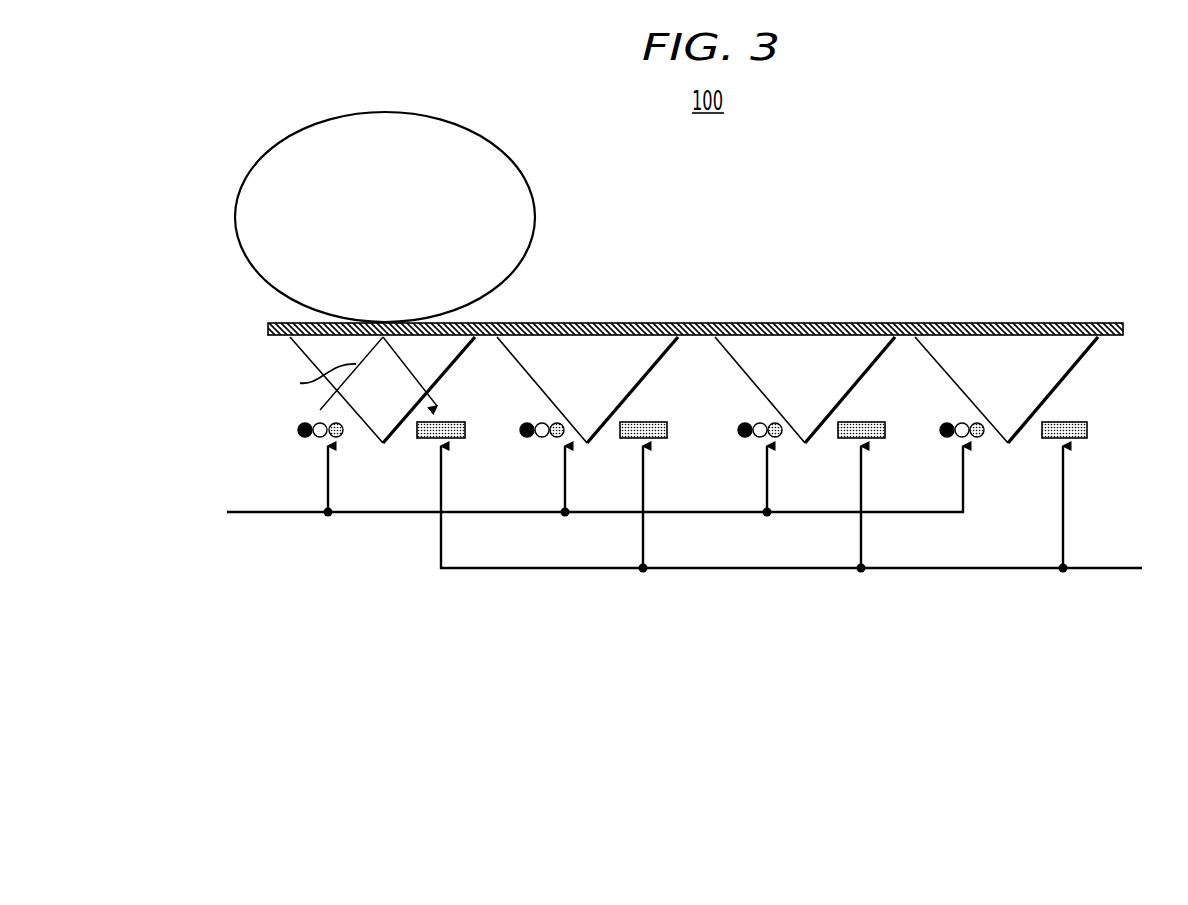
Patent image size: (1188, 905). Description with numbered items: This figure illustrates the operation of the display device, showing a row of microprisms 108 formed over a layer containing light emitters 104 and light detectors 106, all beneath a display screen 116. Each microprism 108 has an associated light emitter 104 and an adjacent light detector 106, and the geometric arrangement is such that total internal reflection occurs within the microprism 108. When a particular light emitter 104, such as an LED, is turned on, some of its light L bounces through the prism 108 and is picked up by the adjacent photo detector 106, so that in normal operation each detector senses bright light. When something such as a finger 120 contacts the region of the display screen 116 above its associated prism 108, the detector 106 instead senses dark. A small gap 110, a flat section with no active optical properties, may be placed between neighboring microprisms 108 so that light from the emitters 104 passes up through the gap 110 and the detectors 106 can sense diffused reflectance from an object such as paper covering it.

The light emitters 104 is at (284, 512).
The light detectors 106 is at (1118, 568).
The microprisms 108 is at (585, 355).
The gap 110 is at (906, 350).
The display screen 116 is at (1052, 324).
The finger 120 is at (262, 162).